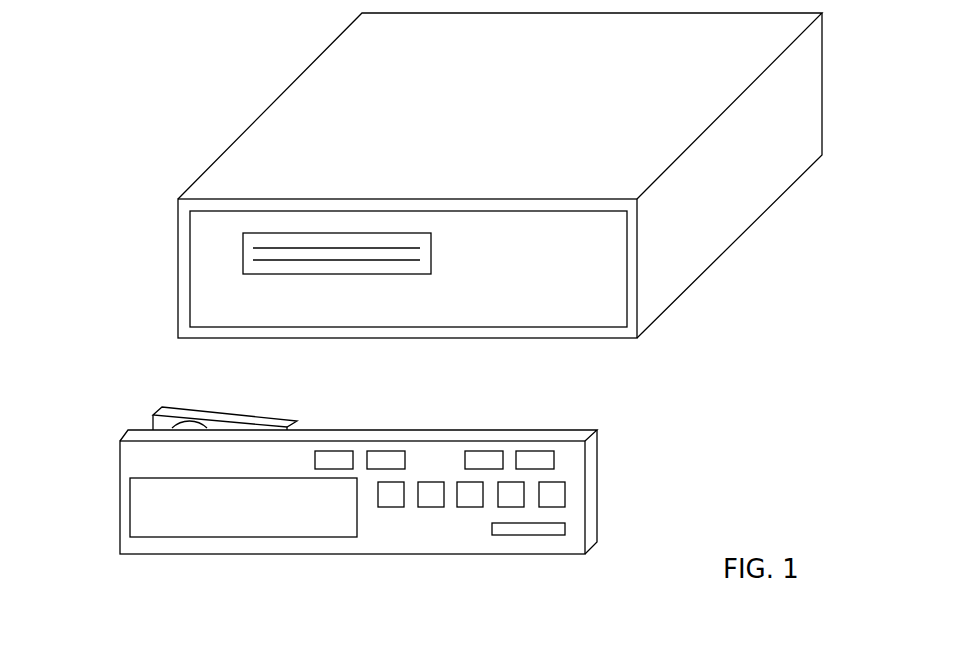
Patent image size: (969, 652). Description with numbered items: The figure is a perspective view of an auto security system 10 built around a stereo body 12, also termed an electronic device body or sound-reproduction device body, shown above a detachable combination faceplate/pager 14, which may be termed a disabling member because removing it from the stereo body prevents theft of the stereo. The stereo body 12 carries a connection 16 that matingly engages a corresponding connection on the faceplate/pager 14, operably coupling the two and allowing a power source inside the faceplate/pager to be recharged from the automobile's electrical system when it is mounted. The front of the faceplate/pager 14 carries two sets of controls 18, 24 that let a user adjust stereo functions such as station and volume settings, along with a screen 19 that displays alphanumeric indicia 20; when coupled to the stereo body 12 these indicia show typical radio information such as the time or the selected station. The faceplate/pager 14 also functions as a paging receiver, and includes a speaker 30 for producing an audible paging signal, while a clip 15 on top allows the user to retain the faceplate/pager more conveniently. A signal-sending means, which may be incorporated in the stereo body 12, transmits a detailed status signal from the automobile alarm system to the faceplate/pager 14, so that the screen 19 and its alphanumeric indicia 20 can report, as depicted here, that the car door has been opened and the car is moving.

The auto security system 10 is at (145, 151).
The stereo body 12 is at (741, 286).
The faceplate/pager 14 is at (99, 455).
The clip 15 is at (270, 417).
The connection 16 is at (253, 274).
The set of controls 18 is at (566, 496).
The screen 19 is at (129, 508).
The alphanumeric indicia 20 is at (292, 527).
The set of controls 24 is at (485, 450).
The speaker 30 is at (547, 535).